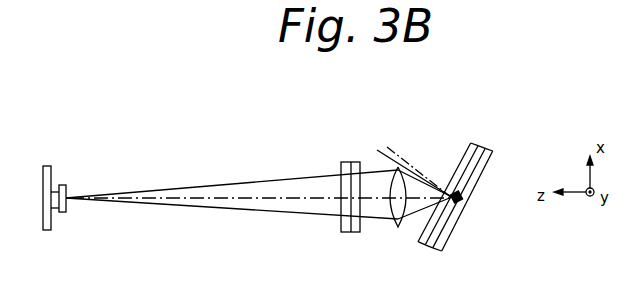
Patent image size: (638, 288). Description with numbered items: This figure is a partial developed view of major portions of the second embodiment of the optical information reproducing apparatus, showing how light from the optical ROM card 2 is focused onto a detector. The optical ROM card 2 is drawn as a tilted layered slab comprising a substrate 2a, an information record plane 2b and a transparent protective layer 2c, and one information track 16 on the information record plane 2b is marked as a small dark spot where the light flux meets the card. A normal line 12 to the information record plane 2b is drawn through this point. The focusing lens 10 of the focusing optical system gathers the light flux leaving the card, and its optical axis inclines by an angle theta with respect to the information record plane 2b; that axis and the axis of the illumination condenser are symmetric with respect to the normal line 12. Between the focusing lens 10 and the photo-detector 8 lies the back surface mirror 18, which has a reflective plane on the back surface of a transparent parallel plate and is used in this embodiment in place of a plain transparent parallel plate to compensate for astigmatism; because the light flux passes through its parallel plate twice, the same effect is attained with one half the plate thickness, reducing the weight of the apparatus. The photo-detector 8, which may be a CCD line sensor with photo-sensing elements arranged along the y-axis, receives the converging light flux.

The photo-detector 8 is at (63, 184).
The back surface mirror 18 is at (352, 161).
The focusing lens 10 is at (402, 171).
The normal line 12 is at (388, 147).
The optical ROM card 2 is at (499, 162).
The substrate 2a is at (486, 193).
The information record plane 2b is at (484, 147).
The transparent protective layer 2c is at (476, 142).
The information track 16 is at (463, 200).